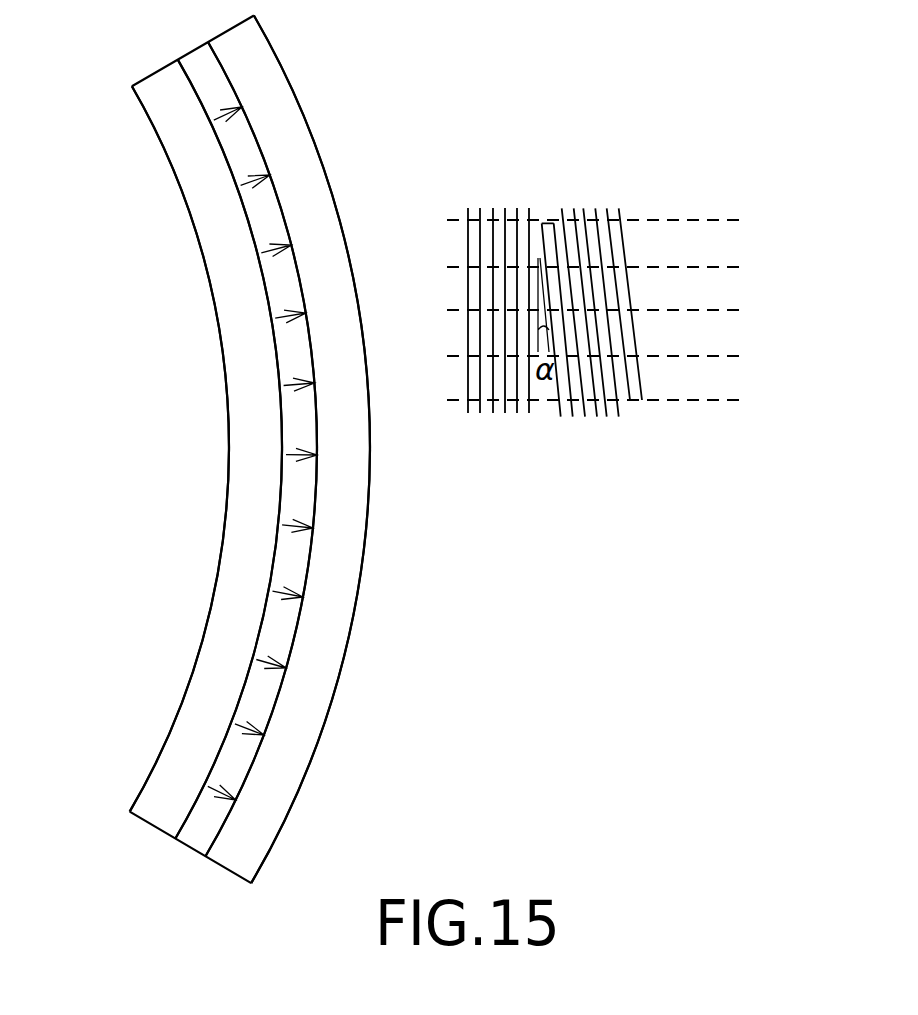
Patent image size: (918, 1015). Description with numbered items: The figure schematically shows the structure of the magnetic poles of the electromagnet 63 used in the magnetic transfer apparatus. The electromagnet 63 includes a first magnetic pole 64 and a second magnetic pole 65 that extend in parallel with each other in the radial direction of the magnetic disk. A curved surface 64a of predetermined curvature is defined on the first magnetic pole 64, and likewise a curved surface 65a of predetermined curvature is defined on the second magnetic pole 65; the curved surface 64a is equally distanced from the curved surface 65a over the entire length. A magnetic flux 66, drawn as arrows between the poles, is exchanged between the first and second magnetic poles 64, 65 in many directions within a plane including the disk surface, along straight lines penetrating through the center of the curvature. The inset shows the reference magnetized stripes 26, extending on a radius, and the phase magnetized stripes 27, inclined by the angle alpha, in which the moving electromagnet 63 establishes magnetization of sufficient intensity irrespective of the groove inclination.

The electromagnet 63 is at (349, 141).
The first magnetic pole 64 is at (218, 590).
The second magnetic pole 65 is at (343, 647).
The curved surface 64a is at (210, 745).
The curved surface 65a is at (276, 692).
The magnetic flux 66 is at (239, 185).
The reference magnetized stripes 26 is at (468, 212).
The phase magnetized stripes 27 is at (625, 232).